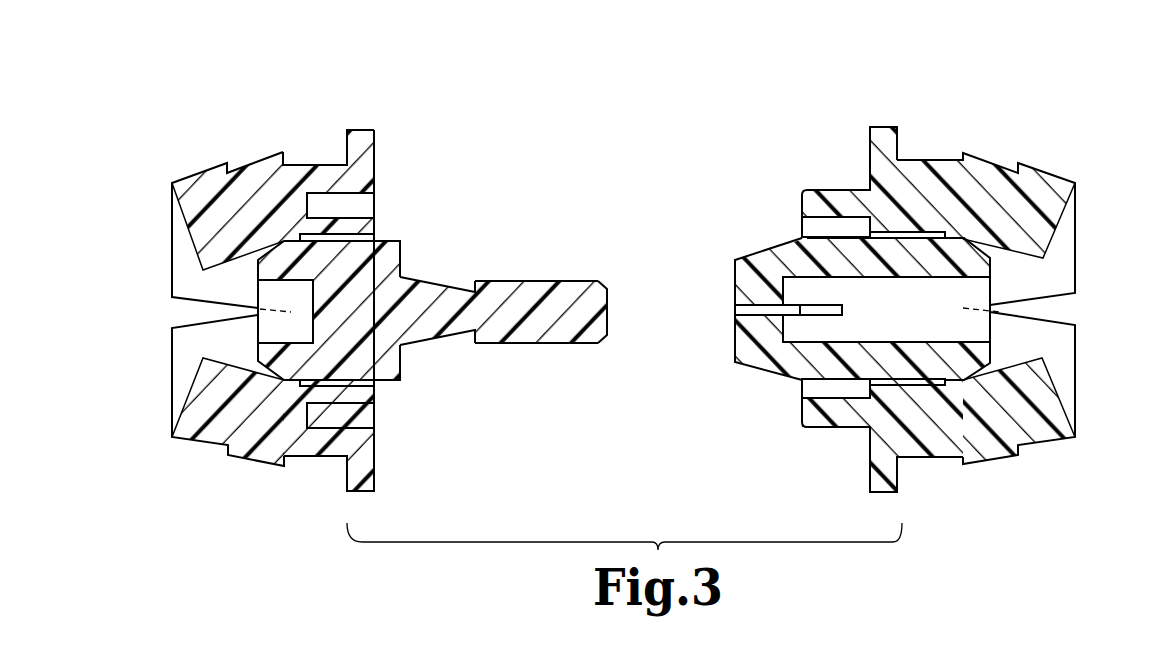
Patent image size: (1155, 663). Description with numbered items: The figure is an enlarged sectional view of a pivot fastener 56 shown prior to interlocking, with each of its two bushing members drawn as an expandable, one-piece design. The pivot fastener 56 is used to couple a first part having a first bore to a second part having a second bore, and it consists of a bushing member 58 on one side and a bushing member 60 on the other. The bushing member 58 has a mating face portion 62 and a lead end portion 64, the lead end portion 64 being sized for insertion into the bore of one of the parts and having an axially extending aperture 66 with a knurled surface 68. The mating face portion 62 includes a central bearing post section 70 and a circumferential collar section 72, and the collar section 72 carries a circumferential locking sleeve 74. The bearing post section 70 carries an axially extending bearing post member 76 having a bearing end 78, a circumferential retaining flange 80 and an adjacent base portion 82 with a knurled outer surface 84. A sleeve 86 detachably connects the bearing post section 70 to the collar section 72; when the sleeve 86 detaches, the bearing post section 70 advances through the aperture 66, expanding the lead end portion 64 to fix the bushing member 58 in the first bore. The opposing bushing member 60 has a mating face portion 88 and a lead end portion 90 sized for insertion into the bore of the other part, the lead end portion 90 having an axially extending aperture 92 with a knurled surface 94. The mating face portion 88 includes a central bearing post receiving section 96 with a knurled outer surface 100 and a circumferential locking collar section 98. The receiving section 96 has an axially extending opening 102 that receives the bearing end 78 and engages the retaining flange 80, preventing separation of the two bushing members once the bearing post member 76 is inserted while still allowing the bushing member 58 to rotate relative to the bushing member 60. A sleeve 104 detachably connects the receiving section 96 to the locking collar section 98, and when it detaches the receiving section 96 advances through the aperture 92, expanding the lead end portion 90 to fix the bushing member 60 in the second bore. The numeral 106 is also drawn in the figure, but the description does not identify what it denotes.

The pivot fastener 56 is at (640, 300).
The bushing member 58 is at (381, 341).
The bushing member 60 is at (912, 333).
The mating face portion 62 is at (386, 440).
The lead end portion 64 is at (168, 432).
The axially extending aperture 66 is at (190, 277).
The knurled surface 68 is at (230, 363).
The central bearing post section 70 is at (400, 255).
The circumferential collar section 72 is at (374, 162).
The circumferential locking sleeve 74 is at (368, 204).
The bearing post member 76 is at (562, 345).
The bearing end 78 is at (607, 309).
The circumferential retaining flange 80 is at (477, 345).
The base portion 82 is at (393, 350).
The knurled outer surface 84 is at (378, 400).
The sleeve 86 is at (295, 232).
The mating face portion 88 is at (792, 423).
The lead end portion 90 is at (1087, 213).
The axially extending aperture 92 is at (1023, 358).
The knurled surface 94 is at (1043, 262).
The central bearing post receiving section 96 is at (833, 260).
The circumferential locking collar section 98 is at (830, 190).
The knurled outer surface 100 is at (932, 232).
The axially extending opening 102 is at (747, 327).
The sleeve 104 is at (960, 386).
The lower strip of second half 106 is at (927, 385).